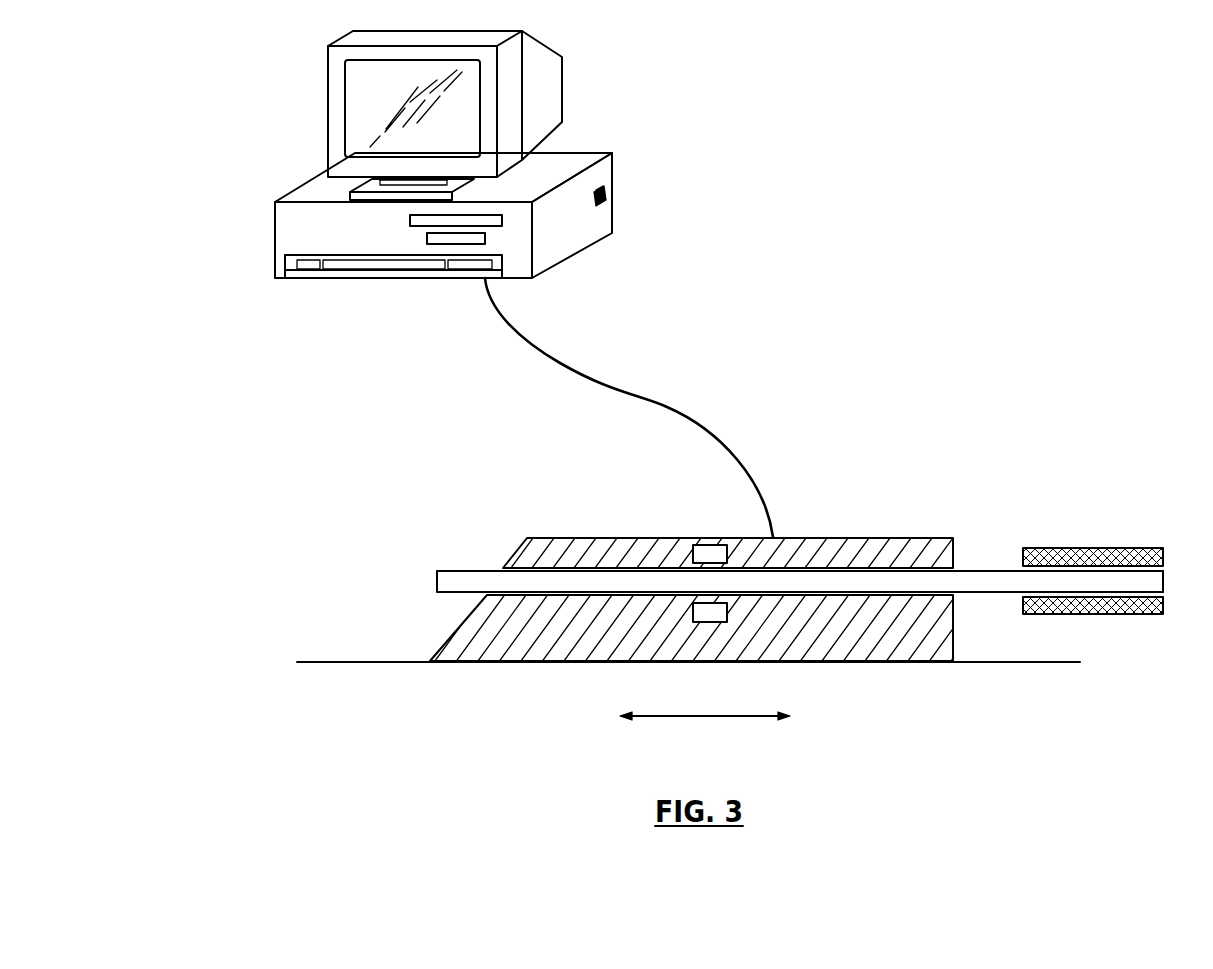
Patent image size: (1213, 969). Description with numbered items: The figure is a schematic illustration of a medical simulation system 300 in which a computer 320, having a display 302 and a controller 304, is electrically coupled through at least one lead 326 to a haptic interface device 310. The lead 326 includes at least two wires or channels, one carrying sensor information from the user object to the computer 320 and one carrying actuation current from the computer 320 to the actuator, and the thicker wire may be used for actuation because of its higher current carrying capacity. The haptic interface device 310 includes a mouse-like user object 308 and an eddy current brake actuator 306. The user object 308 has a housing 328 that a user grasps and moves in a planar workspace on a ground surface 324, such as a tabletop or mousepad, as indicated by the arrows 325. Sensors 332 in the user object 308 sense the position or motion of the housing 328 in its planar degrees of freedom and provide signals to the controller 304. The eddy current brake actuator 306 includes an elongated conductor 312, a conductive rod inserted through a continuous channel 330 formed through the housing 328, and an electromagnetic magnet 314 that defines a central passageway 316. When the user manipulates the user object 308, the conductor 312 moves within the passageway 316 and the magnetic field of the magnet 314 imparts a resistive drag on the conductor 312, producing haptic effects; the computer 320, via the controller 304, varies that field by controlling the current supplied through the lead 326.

The medical simulation system 300 is at (885, 250).
The display 302 is at (355, 125).
The controller 304 is at (592, 225).
The eddy current brake actuator 306 is at (1043, 510).
The user object 308 is at (573, 537).
The haptic interface device 310 is at (490, 515).
The elongated conductor 312 is at (987, 577).
The electromagnetic magnet 314 is at (1102, 548).
The central passageway 316 is at (1017, 599).
The computer 320 is at (306, 58).
The ground surface 324 is at (315, 662).
The arrows 325 is at (647, 720).
The lead 326 is at (668, 407).
The housing 328 is at (467, 632).
The continuous channel 330 is at (480, 555).
The sensors 332 is at (708, 542).